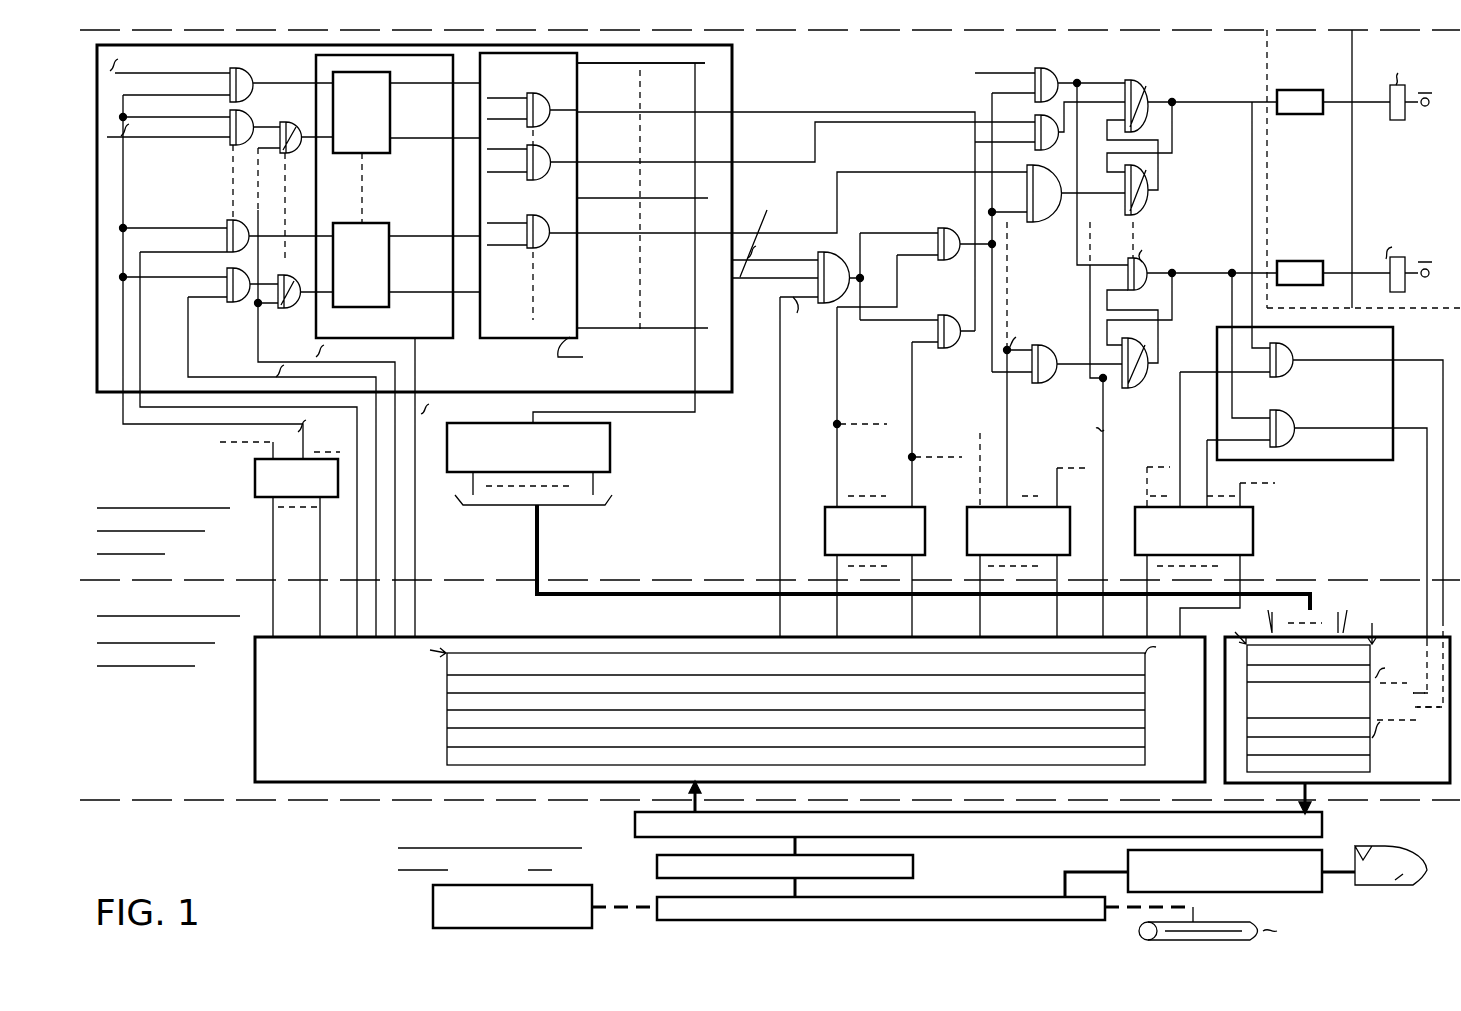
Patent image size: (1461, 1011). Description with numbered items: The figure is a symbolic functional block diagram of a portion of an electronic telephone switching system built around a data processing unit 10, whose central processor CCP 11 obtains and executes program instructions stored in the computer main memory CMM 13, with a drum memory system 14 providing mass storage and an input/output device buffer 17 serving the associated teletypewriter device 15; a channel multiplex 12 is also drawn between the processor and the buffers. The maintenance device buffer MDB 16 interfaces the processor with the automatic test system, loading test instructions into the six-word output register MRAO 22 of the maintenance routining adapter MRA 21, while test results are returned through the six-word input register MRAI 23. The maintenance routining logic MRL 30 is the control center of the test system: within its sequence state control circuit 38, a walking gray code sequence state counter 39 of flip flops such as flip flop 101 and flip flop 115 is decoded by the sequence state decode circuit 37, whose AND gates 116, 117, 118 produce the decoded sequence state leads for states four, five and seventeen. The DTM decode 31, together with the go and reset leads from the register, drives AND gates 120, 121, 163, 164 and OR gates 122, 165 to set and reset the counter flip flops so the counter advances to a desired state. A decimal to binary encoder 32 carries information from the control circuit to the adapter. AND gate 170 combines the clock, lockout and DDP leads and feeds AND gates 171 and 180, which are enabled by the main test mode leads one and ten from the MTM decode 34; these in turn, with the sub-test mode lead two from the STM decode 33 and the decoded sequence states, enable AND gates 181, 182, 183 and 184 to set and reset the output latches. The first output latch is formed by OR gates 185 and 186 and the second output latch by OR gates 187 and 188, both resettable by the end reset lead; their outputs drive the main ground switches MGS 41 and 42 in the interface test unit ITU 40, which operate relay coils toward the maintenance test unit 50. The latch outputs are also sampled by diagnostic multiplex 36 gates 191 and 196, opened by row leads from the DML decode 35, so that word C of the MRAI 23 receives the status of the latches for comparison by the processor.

The data processing unit 10 is at (490, 850).
The central processor CCP 11 is at (987, 897).
The channel multiplex 12 is at (913, 866).
The computer main memory CMM 13 is at (593, 898).
The drum memory system 14 is at (1231, 911).
The teletypewriter device 15 is at (1400, 834).
The maintenance device buffer MDB 16 is at (635, 825).
The input/output device buffer 17 is at (1128, 863).
The maintenance routining adapter MRA 21 is at (195, 689).
The maintenance routining adapter output register MRAO 22 is at (270, 726).
The maintenance routining adapter input register MRAI 23 is at (1412, 768).
The maintenance routining logic MRL 30 is at (246, 554).
The DTM decode 31 is at (256, 463).
The decimal to binary encoder 32 is at (600, 440).
The STM decode 33 is at (972, 510).
The MTM decode 34 is at (832, 510).
The DML decode 35 is at (1253, 545).
The diagnostic multiplex circuit 36 is at (1217, 356).
The sequence state decode circuit 37 is at (513, 328).
The sequence state control circuit 38 is at (735, 80).
The sequence state counter 39 is at (396, 354).
The interface test unit ITU 40 is at (1338, 216).
The main ground switch MGS 41 is at (1316, 88).
The main ground switch MGS 42 is at (1295, 262).
The maintenance test unit MTU 50 is at (1433, 221).
The flip flop 101 is at (366, 230).
The flip flop 115 is at (388, 153).
The AND gate 116 is at (530, 98).
The AND gate 117 is at (530, 153).
The AND gate 118 is at (530, 221).
The AND gate 120 is at (232, 222).
The AND gate 121 is at (242, 304).
The OR gate 122 is at (282, 308).
The AND gate 163 is at (244, 72).
The AND gate 164 is at (226, 147).
The OR gate 165 is at (289, 122).
The AND gate 170 is at (818, 282).
The AND gate 171 is at (948, 228).
The AND gate 180 is at (953, 348).
The AND gate 181 is at (1038, 70).
The AND gate 182 is at (1034, 165).
The AND gate 183 is at (1040, 382).
The AND gate 184 is at (1032, 118).
The OR gate 185 is at (1143, 84).
The OR gate 186 is at (1148, 191).
The OR gate 187 is at (1129, 262).
The OR gate 188 is at (1129, 382).
The AND gate 191 is at (1287, 359).
The AND gate 196 is at (1286, 440).